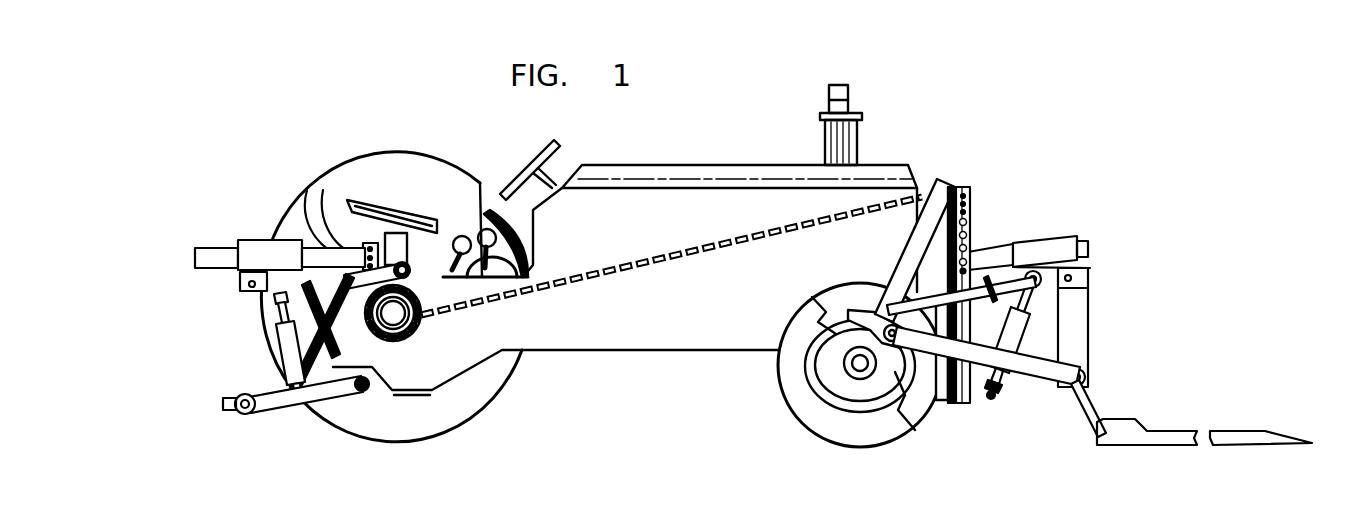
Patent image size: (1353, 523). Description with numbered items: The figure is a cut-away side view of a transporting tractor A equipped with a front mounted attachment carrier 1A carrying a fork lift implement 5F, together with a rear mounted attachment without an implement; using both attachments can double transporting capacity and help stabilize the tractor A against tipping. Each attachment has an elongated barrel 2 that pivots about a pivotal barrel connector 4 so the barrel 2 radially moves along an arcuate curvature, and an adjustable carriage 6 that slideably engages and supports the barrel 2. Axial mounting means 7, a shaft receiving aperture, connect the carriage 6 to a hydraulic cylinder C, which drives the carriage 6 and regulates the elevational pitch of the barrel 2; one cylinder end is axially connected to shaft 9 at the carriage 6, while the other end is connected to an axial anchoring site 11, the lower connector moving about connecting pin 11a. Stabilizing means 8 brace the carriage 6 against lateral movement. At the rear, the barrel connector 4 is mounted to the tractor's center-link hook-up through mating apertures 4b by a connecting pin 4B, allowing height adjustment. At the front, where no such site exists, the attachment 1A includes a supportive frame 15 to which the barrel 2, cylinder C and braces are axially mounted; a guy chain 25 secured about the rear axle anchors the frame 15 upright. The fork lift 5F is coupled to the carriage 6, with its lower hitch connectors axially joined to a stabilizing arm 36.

The tractor A is at (718, 166).
The front mounted attachment carrier 1A is at (1070, 192).
The elongated barrel 2 is at (216, 248).
The pivotal barrel connector 4 is at (312, 228).
The mating apertures 4b is at (307, 190).
The connecting pin 4B is at (983, 252).
The fork lift implement 5F is at (1204, 406).
The adjustable carriage 6 is at (253, 240).
The axial mounting means 7 is at (252, 298).
The stabilizing means 8 is at (981, 298).
The shaft 9 is at (242, 275).
The axial anchoring site 11 is at (608, 397).
The connecting pin 11a is at (993, 392).
The supportive frame 15 is at (980, 259).
The guy chain 25 is at (586, 282).
The stabilizing arm 36 is at (1045, 385).
The hydraulic cylinder C is at (283, 347).